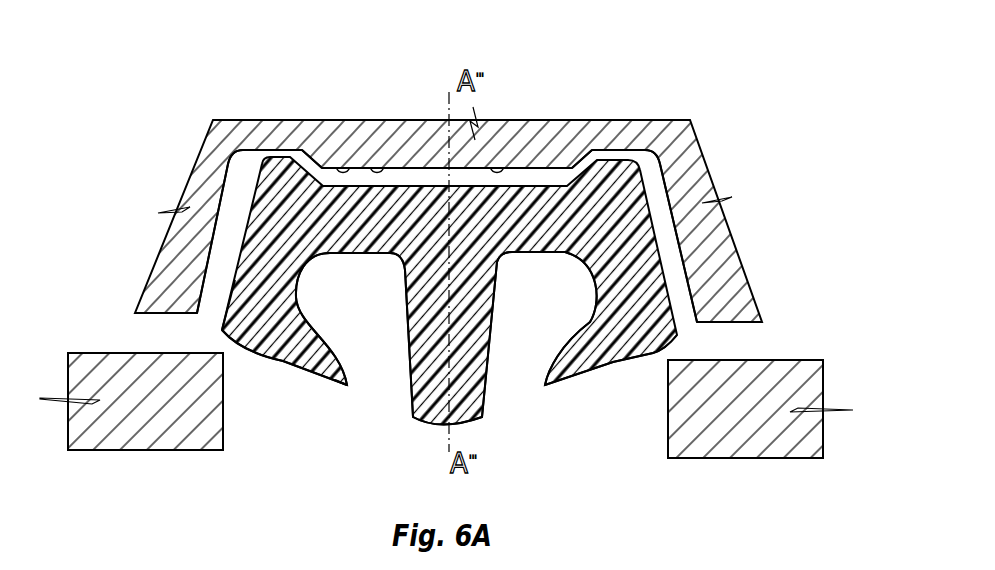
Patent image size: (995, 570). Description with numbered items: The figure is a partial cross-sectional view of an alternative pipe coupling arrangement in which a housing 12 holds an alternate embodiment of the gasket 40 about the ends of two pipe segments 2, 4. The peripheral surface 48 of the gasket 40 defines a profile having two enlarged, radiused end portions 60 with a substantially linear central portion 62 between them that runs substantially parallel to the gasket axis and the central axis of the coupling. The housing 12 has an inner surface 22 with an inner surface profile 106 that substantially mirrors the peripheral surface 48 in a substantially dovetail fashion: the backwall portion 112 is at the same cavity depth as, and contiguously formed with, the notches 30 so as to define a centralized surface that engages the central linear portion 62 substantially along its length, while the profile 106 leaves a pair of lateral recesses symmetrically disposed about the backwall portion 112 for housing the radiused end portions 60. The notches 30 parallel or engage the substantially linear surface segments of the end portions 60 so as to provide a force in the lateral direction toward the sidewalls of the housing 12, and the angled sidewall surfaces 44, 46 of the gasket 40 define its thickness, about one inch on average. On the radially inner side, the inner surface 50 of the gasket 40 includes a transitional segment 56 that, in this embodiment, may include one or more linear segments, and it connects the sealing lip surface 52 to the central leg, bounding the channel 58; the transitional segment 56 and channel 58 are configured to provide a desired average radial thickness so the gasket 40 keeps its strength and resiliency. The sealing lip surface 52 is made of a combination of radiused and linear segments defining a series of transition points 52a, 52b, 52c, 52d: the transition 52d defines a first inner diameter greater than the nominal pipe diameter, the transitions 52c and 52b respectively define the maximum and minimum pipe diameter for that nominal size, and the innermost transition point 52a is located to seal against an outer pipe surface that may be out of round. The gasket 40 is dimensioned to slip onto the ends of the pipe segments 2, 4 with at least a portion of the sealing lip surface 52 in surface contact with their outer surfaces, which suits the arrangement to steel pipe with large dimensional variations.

The pipe segment 2 is at (150, 452).
The pipe segment 4 is at (757, 460).
The housing 12 is at (630, 130).
The inner surface 22 is at (497, 166).
The notches 30 is at (320, 166).
The gasket 40 is at (648, 272).
The angled sidewall surface 44 is at (238, 233).
The angled sidewall surface 46 is at (657, 234).
The peripheral surface 48 is at (527, 186).
The inner surface 50 is at (522, 256).
The sealing lip surface 52 is at (607, 364).
The transition point 52a is at (345, 388).
The transition point 52b is at (293, 365).
The transition point 52c is at (247, 355).
The transition point 52d is at (218, 330).
The transitional segment 56 is at (310, 274).
The channel 58 is at (547, 318).
The enlarged end portions 60 is at (742, 154).
The linear central portion 62 is at (402, 176).
The inner surface profile 106 is at (344, 166).
The backwall portion 112 is at (377, 166).